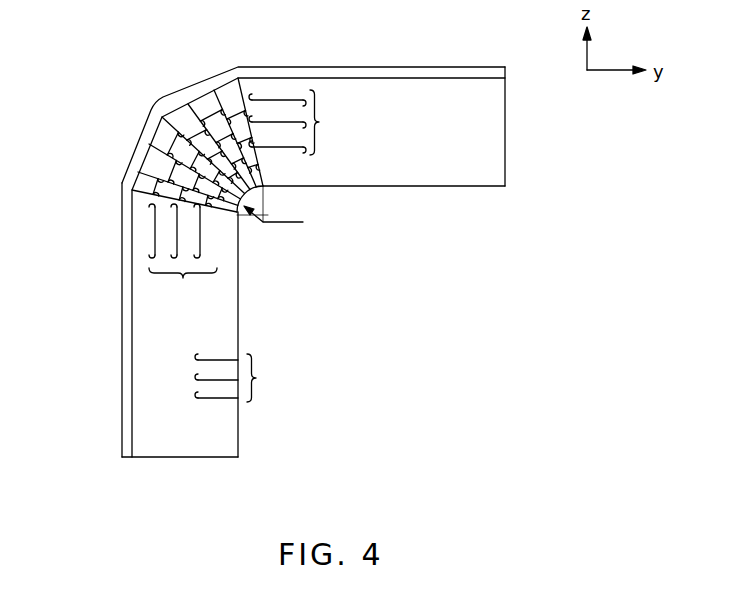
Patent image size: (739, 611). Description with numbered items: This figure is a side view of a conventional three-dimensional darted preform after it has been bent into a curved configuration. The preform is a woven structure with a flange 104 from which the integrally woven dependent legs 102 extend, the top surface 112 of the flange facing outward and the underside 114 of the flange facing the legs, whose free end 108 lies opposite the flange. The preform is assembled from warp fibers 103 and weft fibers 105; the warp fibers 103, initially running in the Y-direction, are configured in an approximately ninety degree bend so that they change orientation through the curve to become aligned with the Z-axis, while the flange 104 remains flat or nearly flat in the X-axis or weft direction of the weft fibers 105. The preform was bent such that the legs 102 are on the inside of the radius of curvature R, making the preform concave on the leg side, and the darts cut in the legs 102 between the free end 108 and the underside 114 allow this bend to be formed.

The legs 102 is at (488, 156).
The warp fibers 103 is at (193, 122).
The flange 104 is at (493, 70).
The weft fibers 105 is at (194, 120).
The free end 108 is at (497, 187).
The top surface 112 is at (122, 327).
The underside 114 is at (143, 447).
The radius of curvature R is at (270, 204).